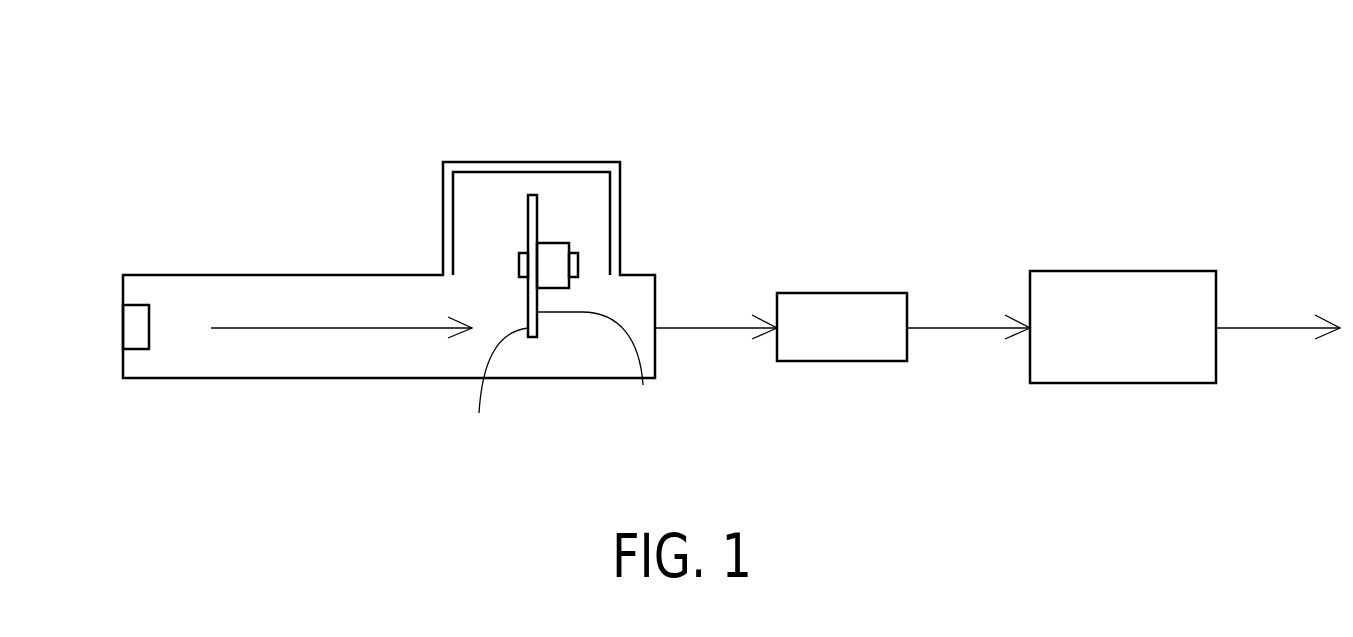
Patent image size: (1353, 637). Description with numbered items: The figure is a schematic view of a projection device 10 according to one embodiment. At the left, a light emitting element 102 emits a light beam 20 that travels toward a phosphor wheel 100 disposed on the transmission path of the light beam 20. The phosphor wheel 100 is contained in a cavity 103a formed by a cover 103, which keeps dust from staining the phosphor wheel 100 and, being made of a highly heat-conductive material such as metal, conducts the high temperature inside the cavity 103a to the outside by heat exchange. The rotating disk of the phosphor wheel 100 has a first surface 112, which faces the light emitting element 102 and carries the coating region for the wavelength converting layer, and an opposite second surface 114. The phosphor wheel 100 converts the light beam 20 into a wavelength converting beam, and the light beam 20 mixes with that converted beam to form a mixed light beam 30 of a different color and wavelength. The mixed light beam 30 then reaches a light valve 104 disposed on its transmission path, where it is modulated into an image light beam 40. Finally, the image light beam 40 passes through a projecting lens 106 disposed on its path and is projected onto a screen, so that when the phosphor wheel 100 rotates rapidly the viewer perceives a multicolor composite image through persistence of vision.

The projection device 10 is at (205, 77).
The phosphor wheel 100 is at (558, 364).
The light emitting element 102 is at (123, 327).
The cover 103 is at (485, 162).
The cavity 103a is at (589, 187).
The light beam 20 is at (275, 328).
The first surface 112 is at (517, 326).
The second surface 114 is at (603, 385).
The mixed light beam 30 is at (717, 328).
The light valve 104 is at (837, 307).
The image light beam 40 is at (970, 328).
The projecting lens 106 is at (1113, 305).